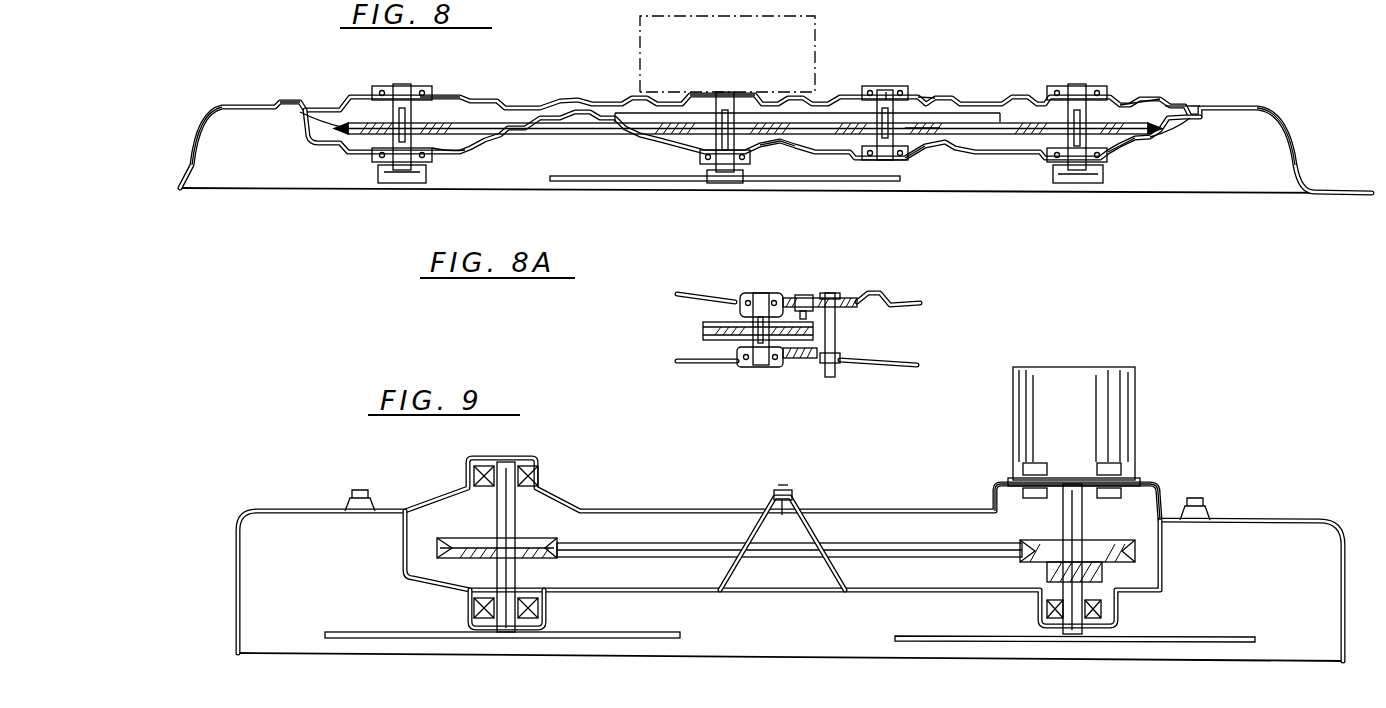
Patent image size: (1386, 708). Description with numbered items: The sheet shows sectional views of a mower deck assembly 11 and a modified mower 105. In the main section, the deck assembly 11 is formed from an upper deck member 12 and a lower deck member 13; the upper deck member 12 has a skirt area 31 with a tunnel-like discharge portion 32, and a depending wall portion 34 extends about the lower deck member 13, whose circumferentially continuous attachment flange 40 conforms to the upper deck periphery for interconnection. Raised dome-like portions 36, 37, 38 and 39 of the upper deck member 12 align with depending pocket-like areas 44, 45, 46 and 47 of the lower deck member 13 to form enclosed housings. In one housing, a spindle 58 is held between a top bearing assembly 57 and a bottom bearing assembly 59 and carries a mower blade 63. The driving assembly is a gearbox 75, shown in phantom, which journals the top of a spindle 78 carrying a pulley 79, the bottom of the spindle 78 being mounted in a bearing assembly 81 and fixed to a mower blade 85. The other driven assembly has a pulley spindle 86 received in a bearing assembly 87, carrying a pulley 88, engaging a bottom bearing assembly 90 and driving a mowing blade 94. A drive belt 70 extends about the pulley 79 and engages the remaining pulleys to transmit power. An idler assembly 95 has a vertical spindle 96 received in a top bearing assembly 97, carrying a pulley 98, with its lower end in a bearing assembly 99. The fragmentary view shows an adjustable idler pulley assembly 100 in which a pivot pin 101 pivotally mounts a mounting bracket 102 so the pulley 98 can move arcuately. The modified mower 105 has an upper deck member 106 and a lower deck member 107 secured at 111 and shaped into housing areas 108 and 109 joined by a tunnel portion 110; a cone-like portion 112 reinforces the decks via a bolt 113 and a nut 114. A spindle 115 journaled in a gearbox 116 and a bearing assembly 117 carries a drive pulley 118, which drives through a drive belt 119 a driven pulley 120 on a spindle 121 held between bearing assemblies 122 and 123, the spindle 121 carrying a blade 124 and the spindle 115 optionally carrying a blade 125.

In FIG. 8, the mower deck assembly 11 is at (1310, 88).
In FIG. 8, the upper deck member 12 is at (942, 97).
In FIG. 8A, the upper deck member 12 is at (895, 300).
In FIG. 8, the lower deck member 13 is at (972, 160).
In FIG. 8A, the lower deck member 13 is at (890, 362).
In FIG. 8, the skirt area 31 is at (244, 106).
In FIG. 8, the discharge tunnel 32 is at (1298, 125).
In FIG. 8, the depending wall portion 34 is at (196, 150).
In FIG. 8, the dome-like portion 36 is at (448, 97).
In FIG. 8, the dome-like portion 37 is at (785, 95).
In FIG. 8, the dome-like portion 38 is at (1125, 100).
In FIG. 8, the dome-like portion 39 is at (905, 94).
In FIG. 8, the attachment flange 40 is at (288, 110).
In FIG. 8, the pocket-like area 44 is at (444, 152).
In FIG. 8, the pocket-like area 45 is at (790, 146).
In FIG. 8, the pocket-like area 46 is at (1120, 148).
In FIG. 8, the pocket-like area 47 is at (900, 152).
In FIG. 8, the bearing assembly 57 is at (412, 92).
In FIG. 8, the spindle 58 is at (376, 92).
In FIG. 8, the bottom bearing assembly 59 is at (376, 158).
In FIG. 8, the mower blade 63 is at (428, 176).
In FIG. 8, the drive belt 70 is at (480, 128).
In FIG. 8, the gearbox 75 is at (815, 42).
In FIG. 8, the spindle 78 is at (724, 92).
In FIG. 8, the pulley 79 is at (696, 95).
In FIG. 8, the bearing assembly 81 is at (750, 158).
In FIG. 8, the mower blade 85 is at (560, 176).
In FIG. 8, the pulley spindle 86 is at (1080, 110).
In FIG. 8, the bearing assembly 87 is at (1078, 88).
In FIG. 8, the pulley 88 is at (1140, 120).
In FIG. 8, the bottom bearing assembly 90 is at (1104, 160).
In FIG. 8, the mowing blade 94 is at (1053, 178).
In FIG. 8, the idler assembly 95 is at (889, 90).
In FIG. 8, the spindle 96 is at (884, 92).
In FIG. 8A, the spindle 96 is at (760, 300).
In FIG. 8, the top bearing assembly 97 is at (866, 94).
In FIG. 8A, the top bearing assembly 97 is at (745, 300).
In FIG. 8, the pulley 98 is at (905, 118).
In FIG. 8A, the pulley 98 is at (703, 323).
In FIG. 8, the bearing assembly 99 is at (868, 158).
In FIG. 8A, the bearing assembly 99 is at (742, 363).
In FIG. 8A, the idler pulley assembly 100 is at (830, 290).
In FIG. 8A, the pivot pin 101 is at (836, 325).
In FIG. 8A, the mounting bracket 102 is at (801, 295).
In FIG. 9, the mower 105 is at (1160, 466).
In FIG. 9, the upper deck member 106 is at (1280, 521).
In FIG. 9, the lower deck member 107 is at (912, 592).
In FIG. 9, the housing area 108 is at (1090, 522).
In FIG. 9, the housing area 109 is at (478, 526).
In FIG. 9, the tunnel portion 110 is at (836, 540).
In FIG. 9, the securing location 111 is at (362, 490).
In FIG. 9, the cone-like portion 112 is at (828, 588).
In FIG. 9, the bolt 113 is at (790, 490).
In FIG. 9, the nut 114 is at (782, 515).
In FIG. 9, the spindle 115 is at (1066, 515).
In FIG. 9, the gearbox 116 is at (1082, 413).
In FIG. 9, the bearing assembly 117 is at (1116, 605).
In FIG. 9, the drive pulley 118 is at (1090, 556).
In FIG. 9, the drive belt 119 is at (912, 556).
In FIG. 9, the driven pulley 120 is at (535, 558).
In FIG. 9, the spindle 121 is at (512, 520).
In FIG. 9, the bearing assembly 122 is at (540, 485).
In FIG. 9, the bearing assembly 123 is at (546, 600).
In FIG. 9, the blade 124 is at (670, 632).
In FIG. 9, the blade 125 is at (898, 636).